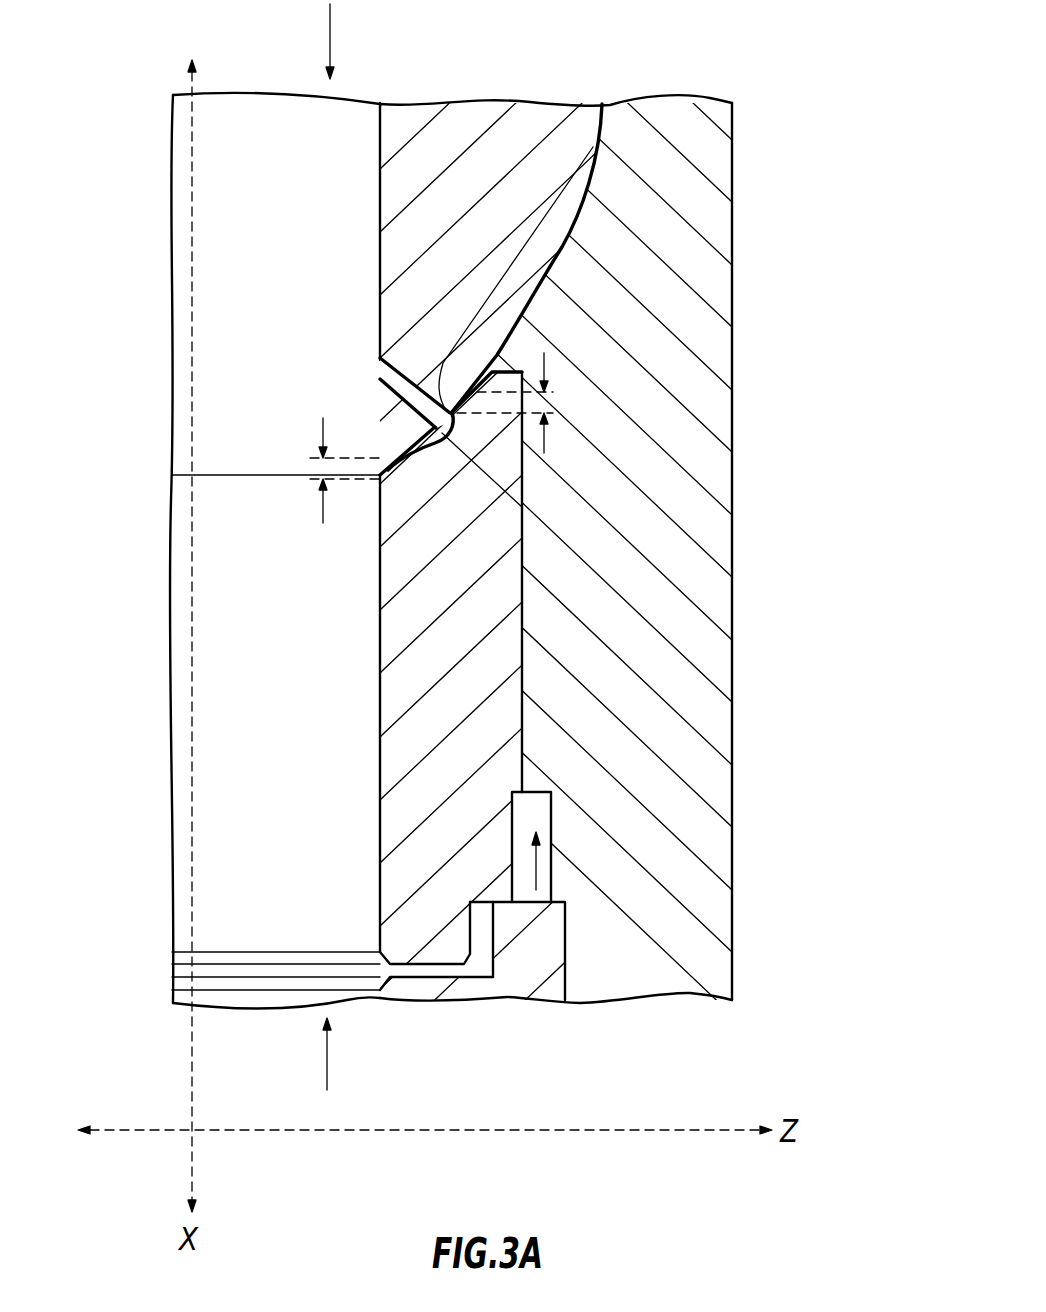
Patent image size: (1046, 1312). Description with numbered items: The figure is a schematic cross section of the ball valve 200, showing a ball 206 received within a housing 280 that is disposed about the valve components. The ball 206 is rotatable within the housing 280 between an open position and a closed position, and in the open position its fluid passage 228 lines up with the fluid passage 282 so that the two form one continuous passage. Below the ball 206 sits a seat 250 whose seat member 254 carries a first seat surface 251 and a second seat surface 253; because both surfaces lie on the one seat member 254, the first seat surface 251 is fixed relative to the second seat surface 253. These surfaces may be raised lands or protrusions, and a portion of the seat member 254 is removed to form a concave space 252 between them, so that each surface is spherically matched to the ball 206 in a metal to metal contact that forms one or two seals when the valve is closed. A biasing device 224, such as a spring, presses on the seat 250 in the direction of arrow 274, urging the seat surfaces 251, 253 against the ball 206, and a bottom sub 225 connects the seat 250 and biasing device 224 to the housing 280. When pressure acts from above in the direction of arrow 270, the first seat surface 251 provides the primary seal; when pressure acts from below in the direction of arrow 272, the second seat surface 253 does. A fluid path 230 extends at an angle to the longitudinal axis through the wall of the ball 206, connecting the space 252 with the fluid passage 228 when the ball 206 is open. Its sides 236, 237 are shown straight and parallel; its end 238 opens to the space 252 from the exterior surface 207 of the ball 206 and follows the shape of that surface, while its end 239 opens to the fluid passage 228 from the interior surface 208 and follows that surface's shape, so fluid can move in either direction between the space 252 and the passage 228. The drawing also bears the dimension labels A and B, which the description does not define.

The ball valve 200 is at (752, 525).
The ball 206 is at (484, 173).
The surface of the ball 207 is at (563, 252).
The interior surface of the ball 208 is at (380, 176).
The biasing device 224 is at (552, 861).
The bottom sub 225 is at (530, 957).
The fluid passage 228 is at (345, 302).
The fluid path 230 is at (356, 361).
The side of the fluid path 236 is at (443, 363).
The side of the fluid path 237 is at (400, 394).
The end of the fluid path 238 is at (447, 385).
The end of the fluid path 239 is at (382, 363).
The seat 250 is at (378, 565).
The first seat surface 251 is at (484, 402).
The space 252 is at (523, 503).
The second seat surface 253 is at (408, 484).
The seat member 254 is at (475, 651).
The arrow 270 is at (335, 18).
The arrow 272 is at (330, 1055).
The arrow 274 is at (537, 866).
The housing 280 is at (672, 511).
The fluid passage 282 is at (230, 822).
The dimension A is at (546, 360).
The dimension B is at (323, 505).